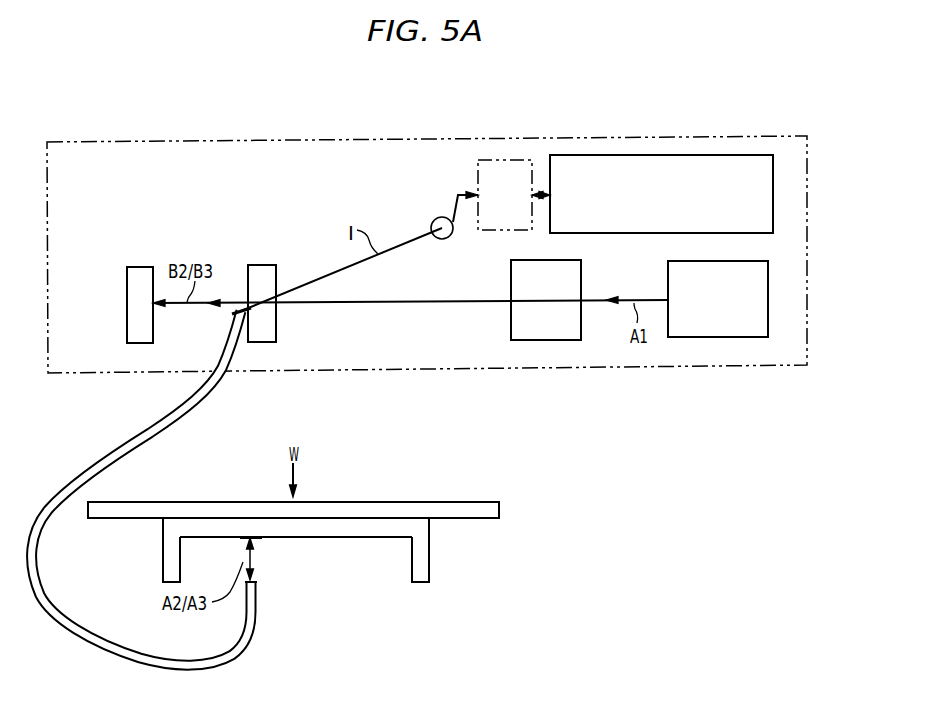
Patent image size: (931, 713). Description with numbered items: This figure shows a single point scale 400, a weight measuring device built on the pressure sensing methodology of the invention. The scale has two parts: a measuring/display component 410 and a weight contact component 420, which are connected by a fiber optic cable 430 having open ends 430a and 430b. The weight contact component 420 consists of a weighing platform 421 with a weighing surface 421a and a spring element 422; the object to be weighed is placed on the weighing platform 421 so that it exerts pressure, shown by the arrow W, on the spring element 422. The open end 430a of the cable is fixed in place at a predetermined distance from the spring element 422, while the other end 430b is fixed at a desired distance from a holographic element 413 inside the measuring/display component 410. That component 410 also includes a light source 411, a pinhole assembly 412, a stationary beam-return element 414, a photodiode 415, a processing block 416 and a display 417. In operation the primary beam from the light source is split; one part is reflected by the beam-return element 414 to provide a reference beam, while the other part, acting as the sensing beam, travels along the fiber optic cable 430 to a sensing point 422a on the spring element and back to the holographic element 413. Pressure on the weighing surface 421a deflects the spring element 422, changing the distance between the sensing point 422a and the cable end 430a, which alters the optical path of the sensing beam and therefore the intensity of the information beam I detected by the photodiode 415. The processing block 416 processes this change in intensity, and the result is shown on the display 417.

The single point scale 400 is at (688, 463).
The measuring/display component 410 is at (752, 115).
The light source 411 is at (760, 298).
The pinhole assembly 412 is at (510, 281).
The holographic element 413 is at (260, 266).
The stationary beam-return element 414 is at (138, 267).
The photodiode 415 is at (434, 220).
The processing block 416 is at (502, 160).
The display 417 is at (664, 157).
The weight contact component 420 is at (522, 508).
The weighing platform 421 is at (117, 514).
The weighing surface 421a is at (467, 499).
The spring element 422 is at (345, 531).
The sensing point 422a is at (253, 539).
The fiber optic cable 430 is at (127, 443).
The open end of fiber optic cable 430a is at (255, 583).
The open end of fiber optic cable 430b is at (238, 317).